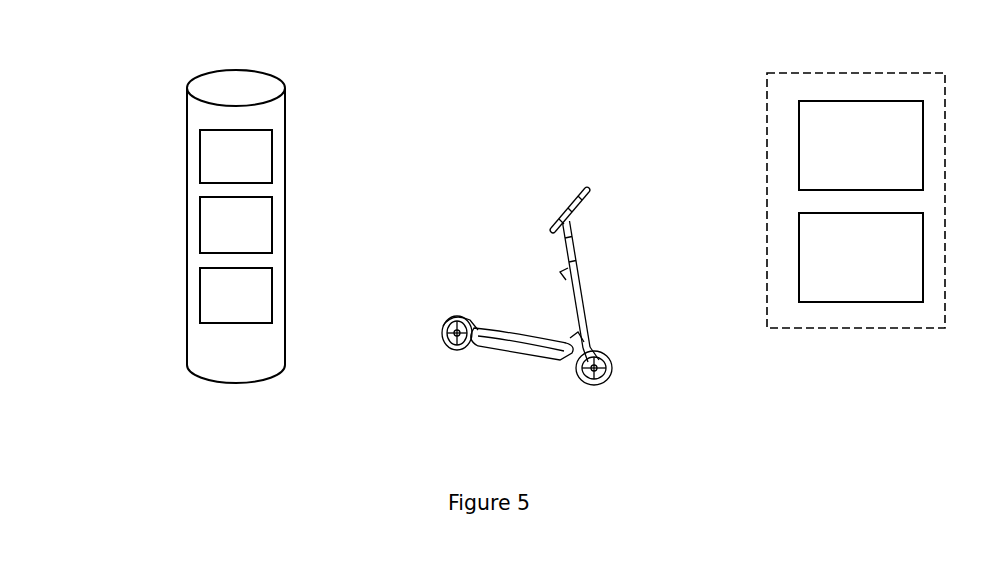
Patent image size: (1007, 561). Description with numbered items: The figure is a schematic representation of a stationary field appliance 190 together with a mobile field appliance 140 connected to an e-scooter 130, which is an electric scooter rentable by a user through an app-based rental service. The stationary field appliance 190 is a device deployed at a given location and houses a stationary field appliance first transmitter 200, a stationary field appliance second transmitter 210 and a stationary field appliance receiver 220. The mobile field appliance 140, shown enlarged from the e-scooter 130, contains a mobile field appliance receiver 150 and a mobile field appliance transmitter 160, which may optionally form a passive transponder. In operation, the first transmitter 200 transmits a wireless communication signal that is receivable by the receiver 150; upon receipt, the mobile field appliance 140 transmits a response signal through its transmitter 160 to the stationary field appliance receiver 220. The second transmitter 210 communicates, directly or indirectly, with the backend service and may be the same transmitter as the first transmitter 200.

The e-scooter 130 is at (527, 327).
The mobile field appliance 140 is at (576, 287).
The mobile field appliance receiver 150 is at (861, 145).
The mobile field appliance transmitter 160 is at (861, 257).
The stationary field appliance 190 is at (232, 269).
The stationary field appliance first transmitter 200 is at (225, 160).
The stationary field appliance second transmitter 210 is at (230, 228).
The stationary field appliance receiver 220 is at (240, 297).